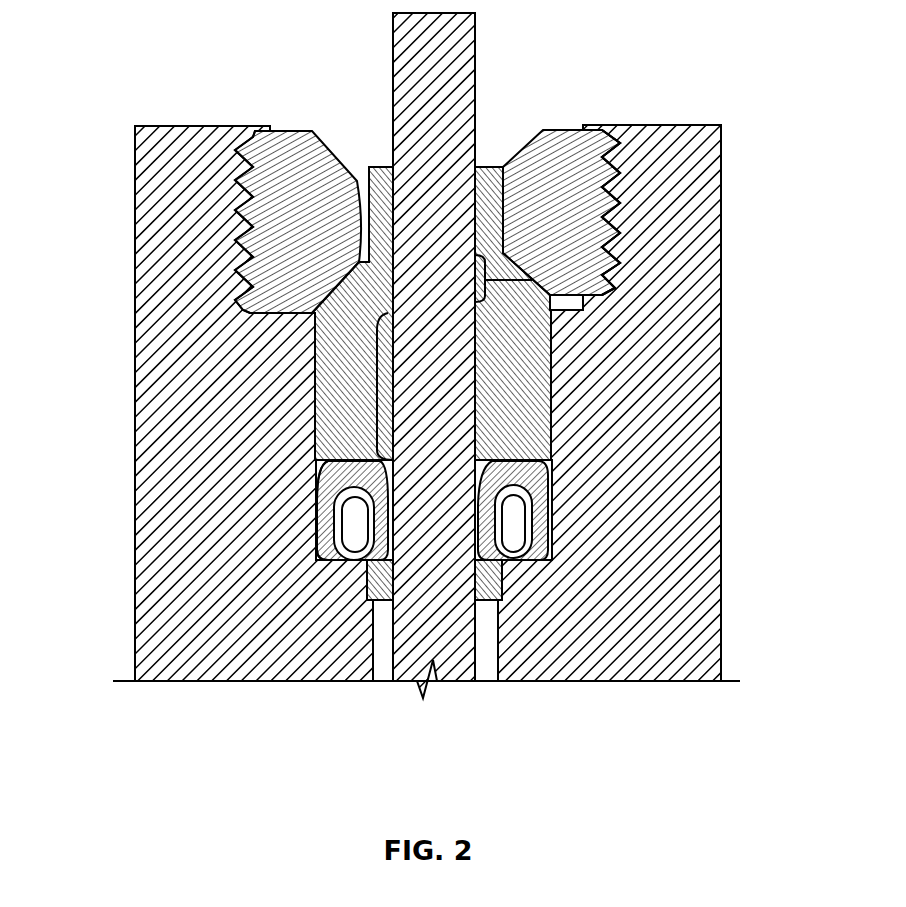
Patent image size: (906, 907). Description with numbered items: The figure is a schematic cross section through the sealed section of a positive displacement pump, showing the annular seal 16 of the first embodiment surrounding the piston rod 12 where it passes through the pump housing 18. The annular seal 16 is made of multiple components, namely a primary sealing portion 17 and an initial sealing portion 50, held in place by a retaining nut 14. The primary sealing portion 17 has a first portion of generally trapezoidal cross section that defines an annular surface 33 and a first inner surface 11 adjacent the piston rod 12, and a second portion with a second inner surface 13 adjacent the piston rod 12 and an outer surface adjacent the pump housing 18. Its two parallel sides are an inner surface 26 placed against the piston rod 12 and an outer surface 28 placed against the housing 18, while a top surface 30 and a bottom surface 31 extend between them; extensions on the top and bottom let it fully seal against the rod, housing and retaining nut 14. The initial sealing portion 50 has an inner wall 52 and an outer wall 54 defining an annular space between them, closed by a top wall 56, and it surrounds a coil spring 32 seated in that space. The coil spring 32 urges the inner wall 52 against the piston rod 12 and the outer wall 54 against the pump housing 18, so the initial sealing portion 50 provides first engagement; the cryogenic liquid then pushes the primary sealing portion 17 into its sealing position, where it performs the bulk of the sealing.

The first inner surface 11 is at (532, 280).
The piston rod 12 is at (475, 47).
The second inner surface 13 is at (370, 385).
The retaining nut 14 is at (560, 140).
The annular seal 16 is at (298, 360).
The primary sealing portion 17 is at (327, 418).
The pump housing 18 is at (663, 125).
The inner surface 26 is at (477, 417).
The outer surface 28 is at (552, 338).
The top surface 30 is at (384, 166).
The bottom surface 31 is at (485, 602).
The coil spring 32 is at (518, 550).
The annular surface 33 is at (333, 158).
The initial sealing portion 50 is at (536, 474).
The inner wall 52 is at (383, 520).
The outer wall 54 is at (327, 505).
The top wall 56 is at (350, 475).